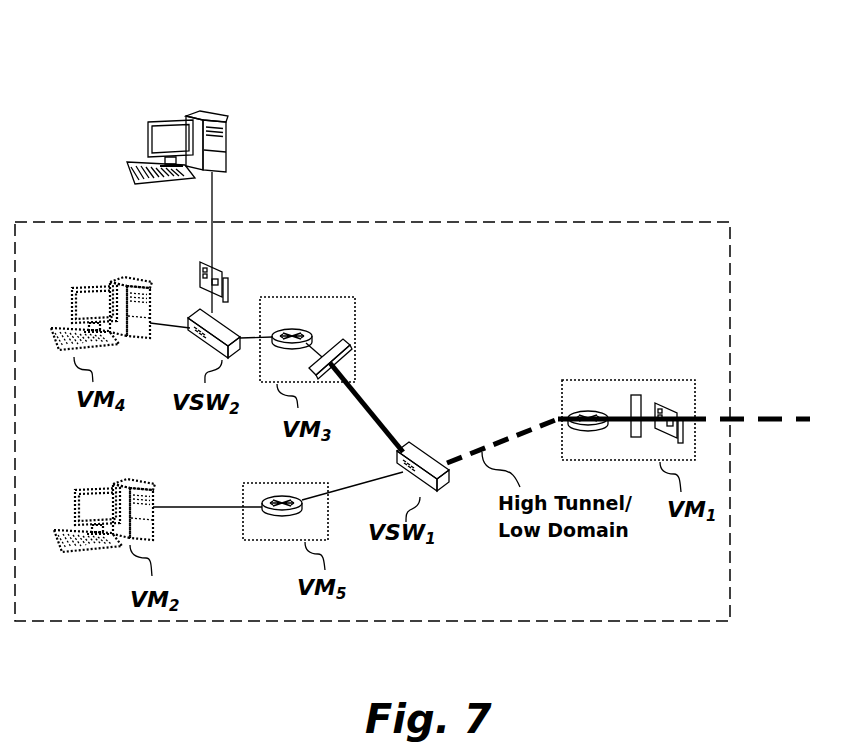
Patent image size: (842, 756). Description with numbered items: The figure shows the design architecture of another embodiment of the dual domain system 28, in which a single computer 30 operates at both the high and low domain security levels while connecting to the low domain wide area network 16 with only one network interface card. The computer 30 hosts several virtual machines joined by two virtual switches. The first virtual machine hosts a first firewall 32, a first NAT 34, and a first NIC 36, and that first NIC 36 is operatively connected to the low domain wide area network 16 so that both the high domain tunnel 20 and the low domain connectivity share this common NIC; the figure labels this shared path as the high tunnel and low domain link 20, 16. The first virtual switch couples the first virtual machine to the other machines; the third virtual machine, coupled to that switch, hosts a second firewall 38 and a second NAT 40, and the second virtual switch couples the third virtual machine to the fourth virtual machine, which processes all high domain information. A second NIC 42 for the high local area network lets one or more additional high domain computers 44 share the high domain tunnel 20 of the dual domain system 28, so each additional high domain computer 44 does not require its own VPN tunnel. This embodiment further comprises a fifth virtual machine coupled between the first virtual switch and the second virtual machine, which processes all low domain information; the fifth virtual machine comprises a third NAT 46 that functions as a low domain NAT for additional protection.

The dual domain system 28 is at (92, 54).
The computer 30 is at (528, 222).
The high domain computer 44 is at (228, 141).
The second NIC 42 is at (232, 285).
The second NAT 40 is at (296, 328).
The second firewall 38 is at (352, 342).
The high tunnel link 20 is at (375, 412).
The first NAT 34 is at (586, 408).
The first firewall 32 is at (637, 395).
The first NIC 36 is at (664, 398).
The low domain wide area network 16 is at (756, 425).
The third NAT 46 is at (278, 498).